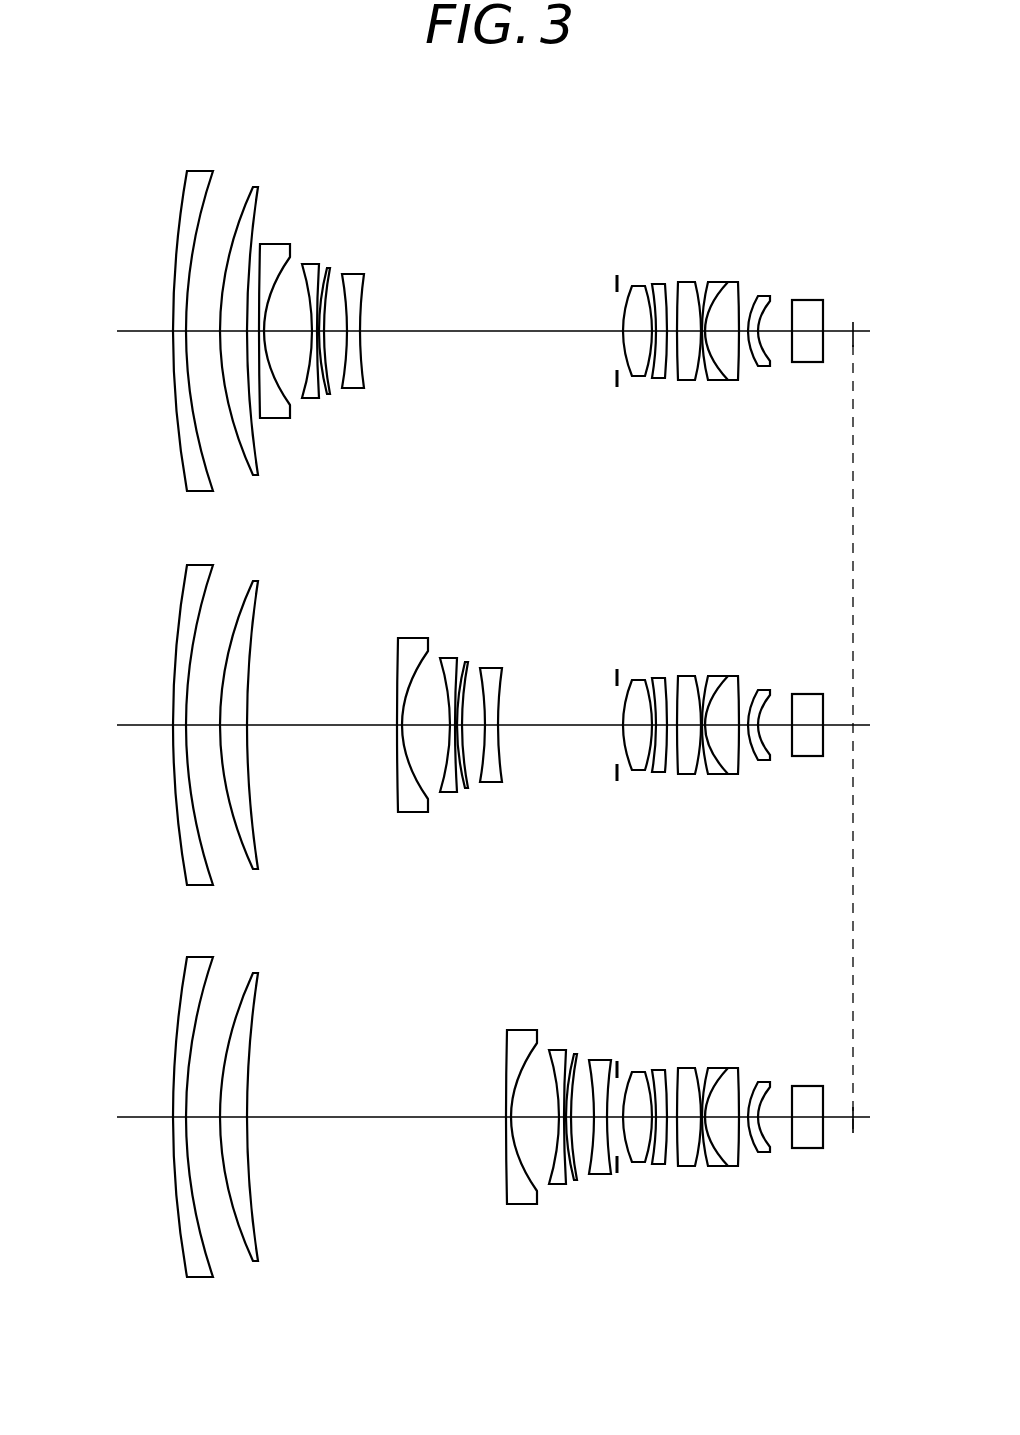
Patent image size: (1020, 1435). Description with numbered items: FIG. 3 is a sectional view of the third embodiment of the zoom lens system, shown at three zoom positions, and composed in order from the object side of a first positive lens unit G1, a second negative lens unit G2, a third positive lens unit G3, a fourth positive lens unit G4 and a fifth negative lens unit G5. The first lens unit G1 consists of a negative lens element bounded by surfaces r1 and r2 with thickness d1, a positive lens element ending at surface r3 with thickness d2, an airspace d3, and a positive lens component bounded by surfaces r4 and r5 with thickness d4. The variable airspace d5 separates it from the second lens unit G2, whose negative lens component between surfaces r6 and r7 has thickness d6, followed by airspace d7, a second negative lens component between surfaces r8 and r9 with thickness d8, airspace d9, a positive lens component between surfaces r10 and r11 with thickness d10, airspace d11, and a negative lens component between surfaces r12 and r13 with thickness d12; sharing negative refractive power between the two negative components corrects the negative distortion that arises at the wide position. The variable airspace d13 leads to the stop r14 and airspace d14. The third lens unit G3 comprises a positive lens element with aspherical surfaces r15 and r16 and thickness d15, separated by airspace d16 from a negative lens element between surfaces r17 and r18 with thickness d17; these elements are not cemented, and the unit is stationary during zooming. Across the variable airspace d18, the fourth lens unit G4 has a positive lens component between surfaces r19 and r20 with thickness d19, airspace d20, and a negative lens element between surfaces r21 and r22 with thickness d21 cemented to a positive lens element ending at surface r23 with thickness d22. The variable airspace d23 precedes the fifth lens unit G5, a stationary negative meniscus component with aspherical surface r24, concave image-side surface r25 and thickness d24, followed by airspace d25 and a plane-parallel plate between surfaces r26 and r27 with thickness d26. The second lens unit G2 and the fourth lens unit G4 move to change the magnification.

The radius of curvature of first surface r1 is at (183, 200).
The radius of curvature of second surface r2 is at (205, 193).
The radius of curvature of third surface r3 is at (215, 172).
The radius of curvature of fourth surface r4 is at (250, 217).
The radius of curvature of fifth surface r5 is at (255, 207).
The radius of curvature of sixth surface r6 is at (273, 243).
The radius of curvature of seventh surface r7 is at (290, 243).
The radius of curvature of eighth surface r8 is at (297, 262).
The radius of curvature of ninth surface r9 is at (314, 262).
The radius of curvature of tenth surface r10 is at (327, 268).
The radius of curvature of eleventh surface r11 is at (341, 274).
The radius of curvature of twelfth surface r12 is at (363, 274).
The radius of curvature of thirteenth surface r13 is at (390, 293).
The stop r14 is at (615, 290).
The radius of curvature of fifteenth surface r15 is at (630, 287).
The radius of curvature of sixteenth surface r16 is at (636, 287).
The radius of curvature of seventeenth surface r17 is at (655, 284).
The radius of curvature of eighteenth surface r18 is at (667, 287).
The radius of curvature of nineteenth surface r19 is at (681, 283).
The radius of curvature of twentieth surface r20 is at (697, 283).
The radius of curvature of twenty-first surface r21 is at (709, 283).
The radius of curvature of twenty-second surface r22 is at (729, 283).
The radius of curvature of twenty-third surface r23 is at (739, 283).
The radius of curvature of twenty-fourth surface r24 is at (755, 296).
The radius of curvature of twenty-fifth surface r25 is at (772, 296).
The radius of curvature of twenty-sixth surface r26 is at (794, 301).
The radius of curvature of twenty-seventh surface r27 is at (824, 305).
The thickness of first lens element d1 is at (174, 336).
The thickness of second lens element d2 is at (192, 332).
The airspace between second and third lens elements d3 is at (220, 335).
The thickness of third lens element d4 is at (247, 336).
The variable airspace D1 d5 is at (259, 336).
The thickness of fourth lens element d6 is at (275, 420).
The airspace between fourth and fifth lens elements d7 is at (308, 337).
The thickness of fifth lens element d8 is at (316, 397).
The airspace between fifth and sixth lens elements d9 is at (316, 330).
The thickness of sixth lens element d10 is at (338, 400).
The airspace between sixth and seventh lens elements d11 is at (340, 396).
The thickness of seventh lens element d12 is at (358, 336).
The variable airspace D2 d13 is at (457, 338).
The airspace between stop and third lens unit d14 is at (623, 332).
The thickness of eighth lens element d15 is at (636, 376).
The airspace between eighth and ninth lens elements d16 is at (652, 331).
The thickness of ninth lens element d17 is at (658, 378).
The variable airspace D3 d18 is at (681, 380).
The thickness of tenth lens element d19 is at (700, 383).
The airspace between tenth and eleventh lens elements d20 is at (712, 383).
The thickness of eleventh lens element d21 is at (727, 385).
The thickness of twelfth lens element d22 is at (742, 383).
The variable airspace D4 d23 is at (760, 375).
The thickness of thirteenth lens element d24 is at (778, 380).
The airspace between fifth lens unit and plate d25 is at (788, 385).
The thickness of fourteenth element d26 is at (812, 336).
The first positive lens unit G1 is at (273, 1287).
The second negative lens unit G2 is at (614, 1212).
The third positive lens unit G3 is at (668, 1212).
The fourth positive lens unit G4 is at (749, 1212).
The fifth negative lens unit G5 is at (786, 1212).